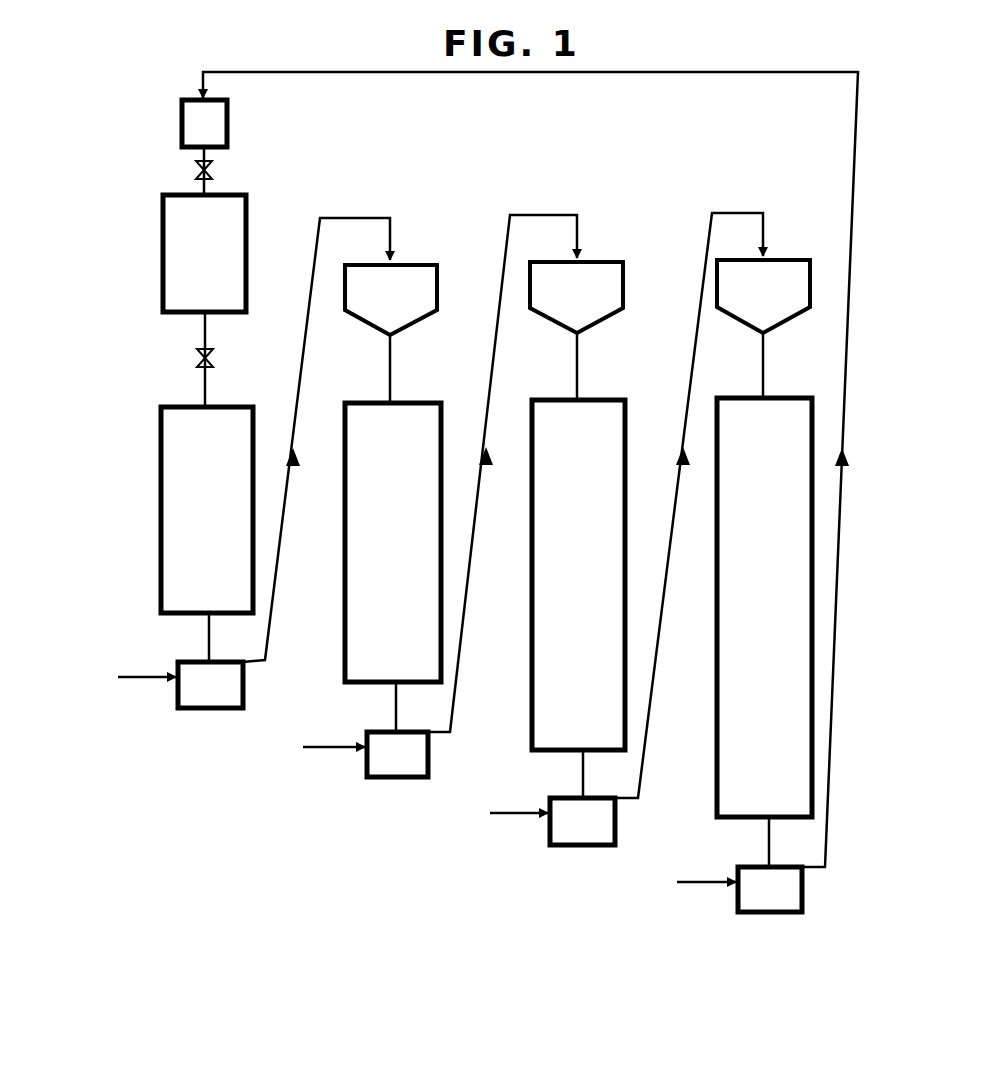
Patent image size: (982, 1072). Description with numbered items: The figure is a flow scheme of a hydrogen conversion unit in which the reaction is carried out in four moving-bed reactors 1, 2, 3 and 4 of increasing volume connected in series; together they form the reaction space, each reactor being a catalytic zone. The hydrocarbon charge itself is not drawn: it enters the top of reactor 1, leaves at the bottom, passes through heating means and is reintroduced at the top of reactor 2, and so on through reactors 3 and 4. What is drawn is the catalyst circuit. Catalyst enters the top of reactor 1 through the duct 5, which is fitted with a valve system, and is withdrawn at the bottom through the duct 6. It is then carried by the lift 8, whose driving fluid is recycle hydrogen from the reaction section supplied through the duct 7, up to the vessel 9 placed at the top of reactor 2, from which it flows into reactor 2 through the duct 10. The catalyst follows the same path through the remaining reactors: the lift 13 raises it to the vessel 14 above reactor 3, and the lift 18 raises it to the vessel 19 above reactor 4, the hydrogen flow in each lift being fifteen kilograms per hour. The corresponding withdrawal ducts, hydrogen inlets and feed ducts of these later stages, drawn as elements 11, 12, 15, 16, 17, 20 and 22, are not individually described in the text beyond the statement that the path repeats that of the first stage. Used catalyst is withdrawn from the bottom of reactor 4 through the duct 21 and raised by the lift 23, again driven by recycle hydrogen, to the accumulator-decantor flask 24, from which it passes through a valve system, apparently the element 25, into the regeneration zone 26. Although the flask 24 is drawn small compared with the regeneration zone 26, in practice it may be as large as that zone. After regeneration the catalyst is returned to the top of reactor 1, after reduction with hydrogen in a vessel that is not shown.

The reactor 1 is at (161, 490).
The reactor 2 is at (358, 403).
The reactor 3 is at (555, 400).
The reactor 4 is at (745, 398).
The duct 5 is at (199, 357).
The duct 6 is at (209, 637).
The duct 7 is at (142, 677).
The lift 8 is at (266, 652).
The vessel 9 is at (440, 278).
The duct 10 is at (392, 352).
The outlet pipe 11 is at (396, 708).
The gas inlet 12 is at (312, 747).
The lift 13 is at (453, 722).
The vessel 14 is at (625, 278).
The feed pipe 15 is at (580, 352).
The outlet pipe 16 is at (583, 772).
The gas inlet 17 is at (505, 813).
The lift 18 is at (641, 778).
The vessel 19 is at (810, 277).
The feed pipe 20 is at (766, 375).
The duct 21 is at (769, 840).
The gas inlet 22 is at (690, 884).
The lift 23 is at (828, 852).
The accumulator-decantor flask 24 is at (182, 118).
The valve 25 is at (204, 153).
The regeneration zone 26 is at (163, 236).